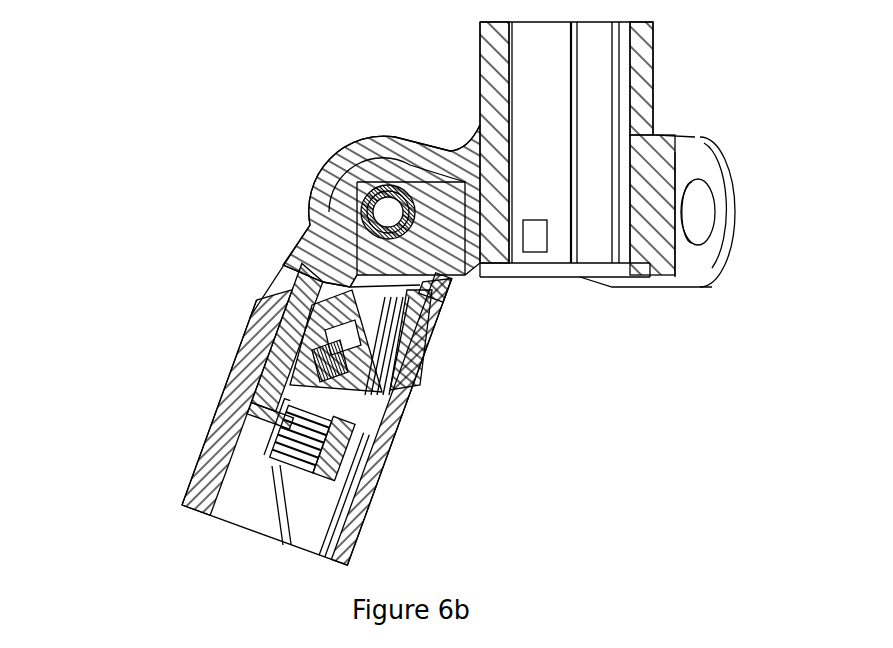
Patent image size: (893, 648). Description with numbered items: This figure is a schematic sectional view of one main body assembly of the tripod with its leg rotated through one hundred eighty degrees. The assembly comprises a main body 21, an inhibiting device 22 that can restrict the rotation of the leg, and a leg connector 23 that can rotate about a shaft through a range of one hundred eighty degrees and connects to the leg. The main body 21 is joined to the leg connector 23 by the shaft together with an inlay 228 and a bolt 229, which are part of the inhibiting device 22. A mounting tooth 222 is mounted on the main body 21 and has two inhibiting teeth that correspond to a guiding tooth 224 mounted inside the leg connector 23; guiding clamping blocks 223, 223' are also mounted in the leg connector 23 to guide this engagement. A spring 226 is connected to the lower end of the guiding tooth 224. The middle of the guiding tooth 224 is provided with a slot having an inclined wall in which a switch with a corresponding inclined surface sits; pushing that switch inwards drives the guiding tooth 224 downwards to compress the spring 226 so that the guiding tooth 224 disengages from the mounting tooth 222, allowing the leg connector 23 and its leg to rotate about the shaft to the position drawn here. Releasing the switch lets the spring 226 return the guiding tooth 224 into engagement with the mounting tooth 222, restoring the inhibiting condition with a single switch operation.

The main body 21 is at (420, 153).
The inhibiting device 22 is at (242, 258).
The leg connector 23 is at (230, 433).
The mounting tooth 222 is at (317, 210).
The guiding clamping block 223 is at (474, 343).
The guiding clamping block 223' is at (224, 346).
The guiding tooth 224 is at (388, 392).
The spring 226 is at (387, 462).
The inlay 228 is at (372, 195).
The bolt 229 is at (430, 317).